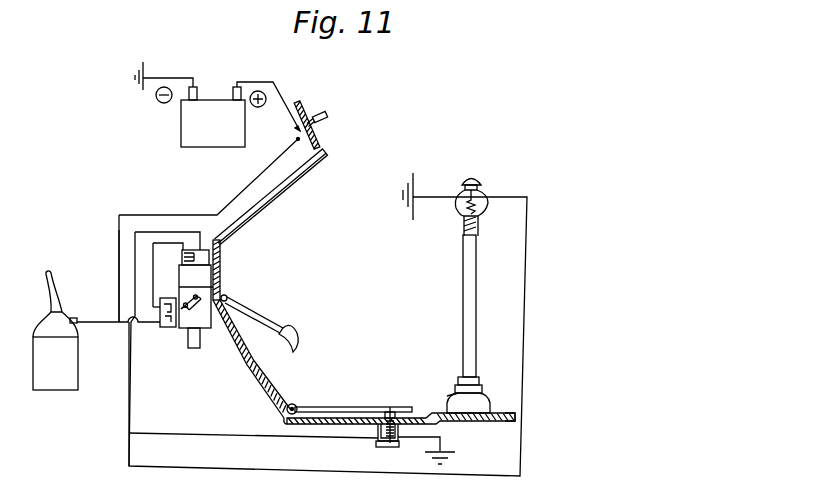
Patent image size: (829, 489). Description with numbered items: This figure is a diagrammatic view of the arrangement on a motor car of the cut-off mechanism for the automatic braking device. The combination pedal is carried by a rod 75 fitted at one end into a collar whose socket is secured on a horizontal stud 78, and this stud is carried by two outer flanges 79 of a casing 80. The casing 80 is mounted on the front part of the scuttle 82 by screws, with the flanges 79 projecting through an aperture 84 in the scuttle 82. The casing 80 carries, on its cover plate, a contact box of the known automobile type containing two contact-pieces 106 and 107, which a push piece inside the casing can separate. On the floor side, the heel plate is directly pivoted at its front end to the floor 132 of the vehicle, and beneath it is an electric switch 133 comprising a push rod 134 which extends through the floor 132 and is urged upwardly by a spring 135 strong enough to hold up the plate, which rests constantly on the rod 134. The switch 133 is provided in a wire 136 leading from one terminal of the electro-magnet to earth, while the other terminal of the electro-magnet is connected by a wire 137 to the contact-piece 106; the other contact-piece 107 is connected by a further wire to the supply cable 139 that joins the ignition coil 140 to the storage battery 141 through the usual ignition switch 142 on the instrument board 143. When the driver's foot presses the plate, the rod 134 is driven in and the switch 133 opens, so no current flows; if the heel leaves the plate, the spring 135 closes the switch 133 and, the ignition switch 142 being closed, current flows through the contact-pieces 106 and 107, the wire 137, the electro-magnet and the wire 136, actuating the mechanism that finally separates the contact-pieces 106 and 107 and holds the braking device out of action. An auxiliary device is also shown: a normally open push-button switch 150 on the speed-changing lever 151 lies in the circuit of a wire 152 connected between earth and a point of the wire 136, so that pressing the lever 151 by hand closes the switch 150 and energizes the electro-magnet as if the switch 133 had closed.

The rod 75 is at (256, 314).
The horizontal stud 78 is at (297, 337).
The outer flanges 79 is at (221, 308).
The casing 80 is at (184, 329).
The scuttle 82 is at (222, 257).
The aperture 84 is at (222, 289).
The contact-piece 106 is at (166, 326).
The contact-piece 107 is at (171, 306).
The floor 132 is at (344, 418).
The electric switch 133 is at (383, 447).
The push rod 134 is at (398, 437).
The spring 135 is at (395, 417).
The wire 136 is at (128, 406).
The wire 137 is at (177, 273).
The supply cable 139 is at (117, 293).
The ignition coil 140 is at (32, 334).
The storage battery 141 is at (200, 108).
The ignition switch 142 is at (322, 137).
The instrument board 143 is at (299, 102).
The push-button switch 150 is at (480, 181).
The speed-changing lever 151 is at (477, 299).
The wire 152 is at (521, 420).